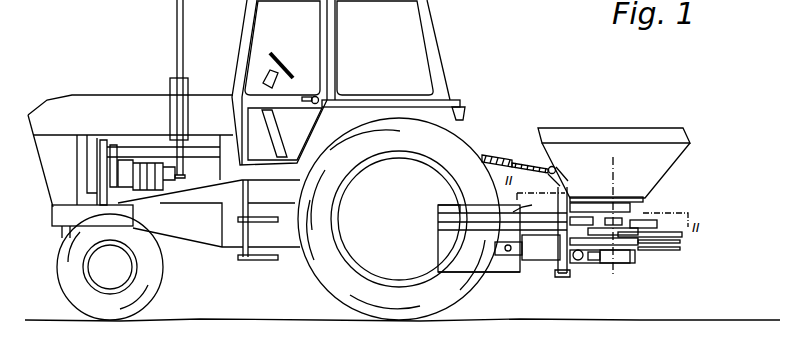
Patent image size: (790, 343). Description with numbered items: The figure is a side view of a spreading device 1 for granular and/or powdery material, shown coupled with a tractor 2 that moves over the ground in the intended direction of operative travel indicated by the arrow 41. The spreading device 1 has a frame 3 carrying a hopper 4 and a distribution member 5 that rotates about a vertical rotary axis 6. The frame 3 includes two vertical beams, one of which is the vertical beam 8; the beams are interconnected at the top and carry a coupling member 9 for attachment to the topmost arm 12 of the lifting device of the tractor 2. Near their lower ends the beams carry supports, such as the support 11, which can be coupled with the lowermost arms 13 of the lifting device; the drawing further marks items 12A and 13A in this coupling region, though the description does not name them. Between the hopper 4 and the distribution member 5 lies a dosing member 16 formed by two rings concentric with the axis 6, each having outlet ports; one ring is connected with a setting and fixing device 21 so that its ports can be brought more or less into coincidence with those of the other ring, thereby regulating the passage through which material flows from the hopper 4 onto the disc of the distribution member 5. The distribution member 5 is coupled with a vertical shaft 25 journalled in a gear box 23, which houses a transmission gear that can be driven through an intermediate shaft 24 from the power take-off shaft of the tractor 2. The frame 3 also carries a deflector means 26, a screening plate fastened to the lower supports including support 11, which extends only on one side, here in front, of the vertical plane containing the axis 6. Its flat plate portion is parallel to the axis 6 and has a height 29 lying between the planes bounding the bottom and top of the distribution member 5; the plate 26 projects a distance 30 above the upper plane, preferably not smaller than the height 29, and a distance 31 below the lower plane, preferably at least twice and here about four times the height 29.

The spreading device 1 is at (614, 183).
The tractor 2 is at (441, 60).
The frame 3 is at (565, 277).
The hopper 4 is at (602, 128).
The distribution member 5 is at (652, 214).
The vertical rotary axis 6 is at (617, 165).
The vertical beam 8 is at (555, 272).
The coupling member 9 is at (562, 172).
The support 11 is at (513, 273).
The topmost arm 12 is at (490, 153).
The chain 12A is at (455, 156).
The lowermost arm 13 is at (503, 248).
The bracket 13A is at (452, 205).
The dosing member 16 is at (603, 195).
The setting and fixing device 21 is at (539, 192).
The gear box 23 is at (632, 263).
The intermediate shaft 24 is at (583, 263).
The vertical shaft 25 is at (648, 258).
The deflector means 26 is at (452, 312).
The height 29 is at (437, 230).
The distance 30 is at (437, 207).
The distance 31 is at (440, 247).
The arrow 41 is at (100, 342).